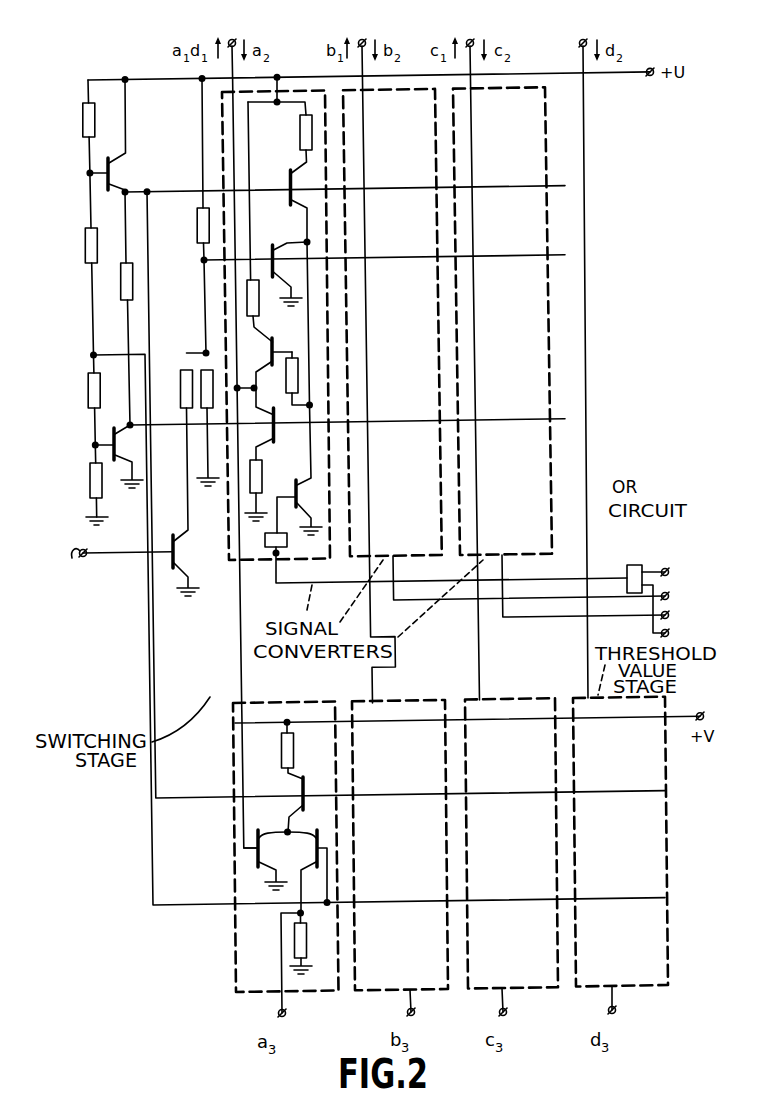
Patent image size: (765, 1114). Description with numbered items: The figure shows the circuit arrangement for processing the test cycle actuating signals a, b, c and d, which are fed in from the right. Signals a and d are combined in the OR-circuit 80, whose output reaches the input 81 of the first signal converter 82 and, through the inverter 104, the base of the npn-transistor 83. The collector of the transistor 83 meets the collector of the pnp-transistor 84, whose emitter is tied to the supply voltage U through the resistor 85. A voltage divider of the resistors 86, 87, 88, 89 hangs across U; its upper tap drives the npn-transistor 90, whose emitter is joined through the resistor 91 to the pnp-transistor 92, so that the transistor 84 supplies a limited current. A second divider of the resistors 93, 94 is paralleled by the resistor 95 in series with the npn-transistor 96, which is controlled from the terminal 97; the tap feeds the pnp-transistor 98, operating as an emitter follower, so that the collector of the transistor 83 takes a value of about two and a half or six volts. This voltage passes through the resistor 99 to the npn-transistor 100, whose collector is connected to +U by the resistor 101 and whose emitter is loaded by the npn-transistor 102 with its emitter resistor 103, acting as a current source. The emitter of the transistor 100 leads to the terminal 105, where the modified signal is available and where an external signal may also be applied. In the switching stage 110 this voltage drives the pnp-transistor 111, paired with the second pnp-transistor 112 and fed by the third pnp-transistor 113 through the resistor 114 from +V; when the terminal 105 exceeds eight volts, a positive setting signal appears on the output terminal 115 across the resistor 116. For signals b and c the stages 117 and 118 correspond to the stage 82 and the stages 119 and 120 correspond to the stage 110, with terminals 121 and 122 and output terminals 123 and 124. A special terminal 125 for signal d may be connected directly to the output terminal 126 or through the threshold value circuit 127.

The OR-circuit 80 is at (612, 528).
The input 81 is at (278, 556).
The first signal converter 82 is at (233, 567).
The npn-transistor 83 is at (295, 388).
The pnp-transistor 84 is at (288, 175).
The resistor 85 is at (300, 128).
The resistor 86 is at (83, 124).
The resistor 87 is at (85, 246).
The resistor 88 is at (88, 394).
The resistor 89 is at (90, 484).
The npn-transistor 90 is at (121, 168).
The resistor 91 is at (122, 285).
The pnp-transistor 92 is at (114, 428).
The resistor 93 is at (197, 228).
The resistor 94 is at (202, 370).
The resistor 95 is at (180, 372).
The npn-transistor 96 is at (183, 546).
The terminal 97 is at (72, 567).
The pnp-transistor 98 is at (273, 245).
The resistor 99 is at (286, 380).
The npn-transistor 100 is at (278, 352).
The resistor 101 is at (264, 299).
The npn-transistor 102 is at (281, 424).
The emitter resistor 103 is at (269, 482).
The inverter 104 is at (265, 547).
The terminal 105 is at (232, 39).
The switching stage 110 is at (230, 702).
The pnp-transistor 111 is at (258, 832).
The second pnp-transistor 112 is at (317, 832).
The third pnp-transistor 113 is at (313, 770).
The resistor 114 is at (280, 747).
The output terminal 115 is at (288, 1013).
The resistor 116 is at (292, 944).
The stage 117 is at (355, 560).
The stage 118 is at (463, 560).
The stage 119 is at (363, 700).
The stage 120 is at (474, 700).
The output 121 is at (362, 39).
The output 122 is at (470, 39).
The output terminal 123 is at (416, 1012).
The output terminal 124 is at (508, 1012).
The terminal 125 is at (583, 39).
The output terminal 126 is at (617, 1010).
The threshold value circuit 127 is at (580, 695).